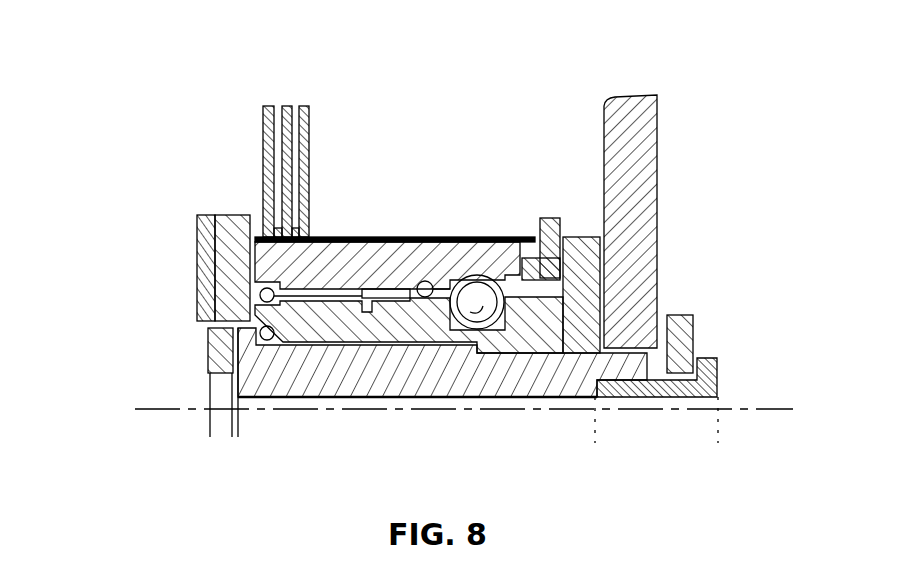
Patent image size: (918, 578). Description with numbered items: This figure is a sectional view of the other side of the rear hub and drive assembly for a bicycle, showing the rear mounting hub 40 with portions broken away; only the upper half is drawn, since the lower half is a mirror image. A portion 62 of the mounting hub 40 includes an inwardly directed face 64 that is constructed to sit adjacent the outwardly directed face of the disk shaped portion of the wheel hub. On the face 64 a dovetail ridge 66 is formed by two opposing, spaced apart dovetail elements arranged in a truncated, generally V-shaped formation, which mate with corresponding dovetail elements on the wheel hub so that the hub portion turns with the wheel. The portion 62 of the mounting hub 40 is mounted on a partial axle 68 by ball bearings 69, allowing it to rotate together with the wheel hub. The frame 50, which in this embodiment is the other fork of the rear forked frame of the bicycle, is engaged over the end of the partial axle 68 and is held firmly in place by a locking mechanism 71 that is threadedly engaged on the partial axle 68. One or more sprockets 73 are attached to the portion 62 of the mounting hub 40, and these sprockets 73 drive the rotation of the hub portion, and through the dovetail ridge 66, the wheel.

The rear mounting hub 40 is at (752, 142).
The frame 50 is at (632, 101).
The portion 62 is at (226, 215).
The inwardly directed face 64 is at (212, 279).
The dovetail ridge 66 is at (198, 247).
The partial axle 68 is at (322, 399).
The ball bearings 69 is at (487, 288).
The locking mechanism 71 is at (700, 357).
The sprockets 73 is at (308, 121).